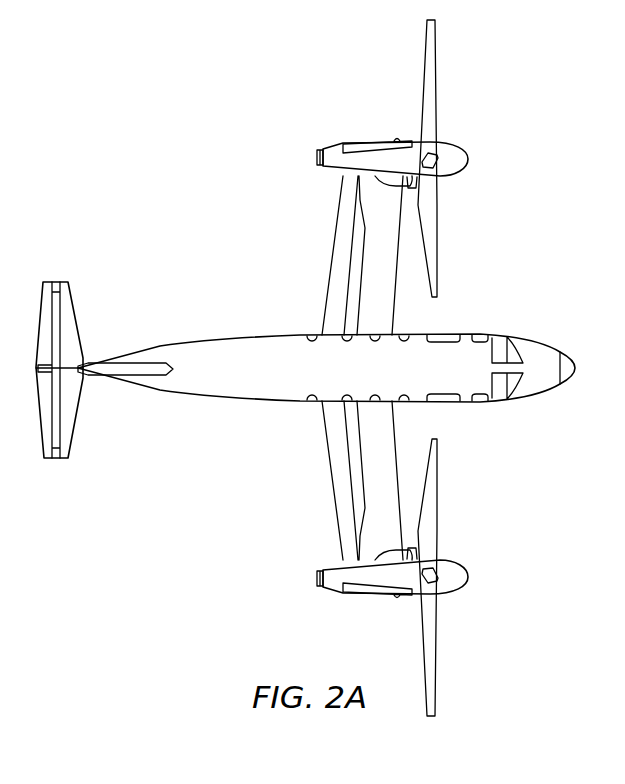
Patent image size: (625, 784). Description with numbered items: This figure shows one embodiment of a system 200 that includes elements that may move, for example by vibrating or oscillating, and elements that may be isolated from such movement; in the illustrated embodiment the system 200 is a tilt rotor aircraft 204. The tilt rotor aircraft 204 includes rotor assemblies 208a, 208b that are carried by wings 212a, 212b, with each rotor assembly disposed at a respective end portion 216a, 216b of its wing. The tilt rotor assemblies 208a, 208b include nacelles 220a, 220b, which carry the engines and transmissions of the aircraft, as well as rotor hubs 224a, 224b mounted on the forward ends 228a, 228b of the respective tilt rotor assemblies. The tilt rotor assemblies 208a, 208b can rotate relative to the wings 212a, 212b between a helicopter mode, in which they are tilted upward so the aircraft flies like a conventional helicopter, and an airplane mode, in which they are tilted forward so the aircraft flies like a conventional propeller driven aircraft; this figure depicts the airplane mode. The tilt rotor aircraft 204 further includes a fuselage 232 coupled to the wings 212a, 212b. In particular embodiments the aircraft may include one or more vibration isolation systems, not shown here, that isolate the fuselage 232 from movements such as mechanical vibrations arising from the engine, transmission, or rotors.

The system 200 is at (183, 296).
The tilt rotor aircraft 204 is at (537, 338).
The rotor assembly 208a is at (331, 125).
The rotor assembly 208b is at (334, 613).
The wing 212a is at (332, 248).
The wing 212b is at (332, 488).
The end portion 216a is at (334, 179).
The end portion 216b is at (334, 556).
The nacelle 220a is at (333, 146).
The nacelle 220b is at (334, 591).
The rotor hub 224a is at (455, 146).
The rotor hub 224b is at (458, 589).
The forward end 228a is at (433, 186).
The forward end 228b is at (420, 556).
The fuselage 232 is at (233, 401).